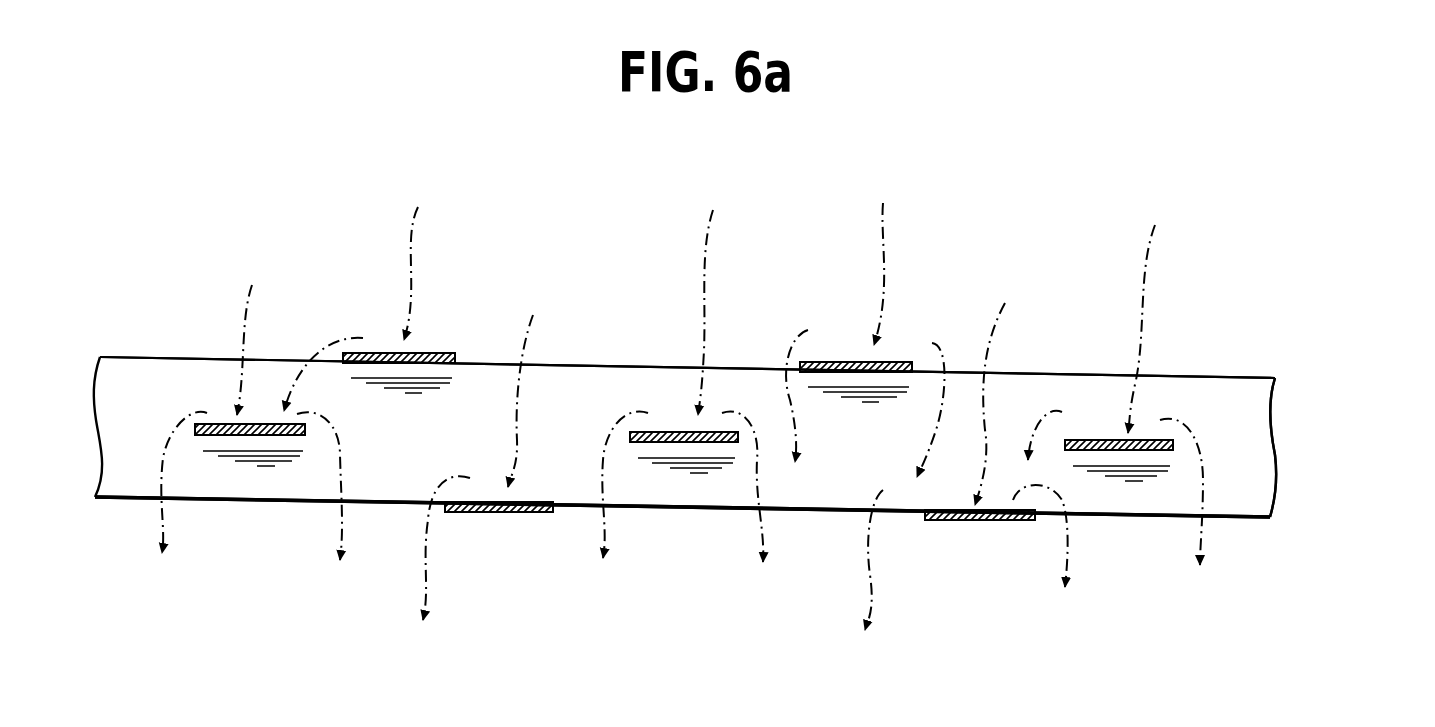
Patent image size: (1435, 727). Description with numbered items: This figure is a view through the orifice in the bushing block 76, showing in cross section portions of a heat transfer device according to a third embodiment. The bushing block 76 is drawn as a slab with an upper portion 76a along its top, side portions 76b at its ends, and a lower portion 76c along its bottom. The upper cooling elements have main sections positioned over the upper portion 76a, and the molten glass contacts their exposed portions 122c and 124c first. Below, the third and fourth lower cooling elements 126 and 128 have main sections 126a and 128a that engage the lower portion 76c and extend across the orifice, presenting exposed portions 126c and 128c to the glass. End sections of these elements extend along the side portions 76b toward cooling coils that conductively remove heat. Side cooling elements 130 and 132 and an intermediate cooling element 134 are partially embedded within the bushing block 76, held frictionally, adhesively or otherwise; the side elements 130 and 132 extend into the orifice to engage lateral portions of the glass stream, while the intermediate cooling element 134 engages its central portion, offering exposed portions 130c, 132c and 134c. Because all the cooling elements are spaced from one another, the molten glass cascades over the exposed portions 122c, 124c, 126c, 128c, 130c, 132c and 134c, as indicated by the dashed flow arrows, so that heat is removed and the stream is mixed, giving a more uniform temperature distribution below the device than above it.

The bushing block 76 is at (1250, 399).
The upper portion of the bushing block 76a is at (1225, 375).
The side portions of the bushing block 76b is at (1247, 447).
The lower portion of the bushing block 76c is at (1248, 517).
The exposed portion of first upper cooling element 122c is at (413, 353).
The exposed portion of second upper cooling element 124c is at (880, 362).
The third lower cooling element 126 is at (500, 512).
The main section of third lower cooling element 126a is at (543, 513).
The exposed portion of third lower cooling element 126c is at (518, 502).
The fourth lower cooling element 128 is at (960, 522).
The main section of fourth lower cooling element 128a is at (1010, 521).
The exposed portion of fourth lower cooling element 128c is at (1005, 510).
The side cooling element 130 is at (237, 436).
The exposed portion of side cooling element 130c is at (264, 424).
The side cooling element 132 is at (1125, 451).
The exposed portion of side cooling element 132c is at (1138, 440).
The intermediate cooling element 134 is at (677, 443).
The exposed portion of intermediate cooling element 134c is at (702, 432).